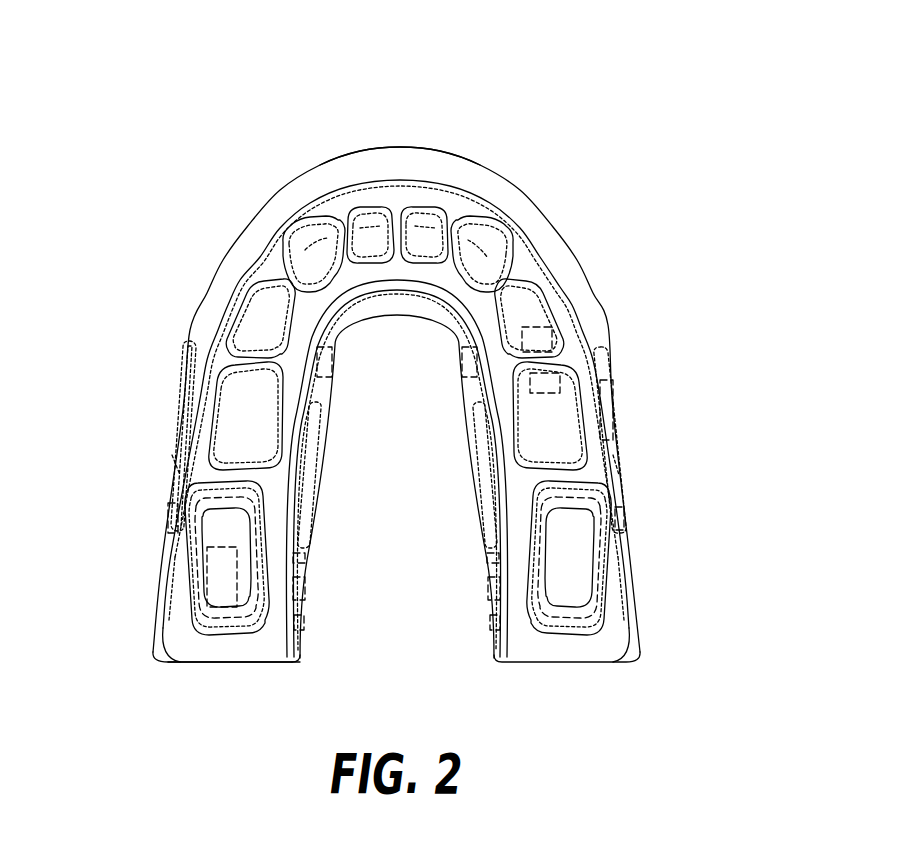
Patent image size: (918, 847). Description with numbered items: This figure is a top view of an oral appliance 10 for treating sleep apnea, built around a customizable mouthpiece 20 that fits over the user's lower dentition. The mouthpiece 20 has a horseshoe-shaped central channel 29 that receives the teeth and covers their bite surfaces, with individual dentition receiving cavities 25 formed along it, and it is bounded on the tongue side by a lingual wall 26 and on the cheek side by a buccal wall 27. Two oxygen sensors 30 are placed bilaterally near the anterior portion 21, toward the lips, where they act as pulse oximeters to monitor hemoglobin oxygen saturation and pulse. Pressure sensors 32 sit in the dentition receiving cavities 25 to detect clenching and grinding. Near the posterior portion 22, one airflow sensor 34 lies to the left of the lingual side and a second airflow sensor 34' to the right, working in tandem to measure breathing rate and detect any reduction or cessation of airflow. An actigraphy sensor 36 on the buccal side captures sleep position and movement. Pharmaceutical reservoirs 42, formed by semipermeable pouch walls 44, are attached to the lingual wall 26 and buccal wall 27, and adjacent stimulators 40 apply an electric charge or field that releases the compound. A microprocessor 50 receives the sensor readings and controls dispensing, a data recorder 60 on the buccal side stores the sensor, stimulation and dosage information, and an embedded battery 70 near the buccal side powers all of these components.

The oral appliance 10 is at (511, 82).
The mouthpiece 20 is at (615, 312).
The anterior portion 21 is at (326, 141).
The posterior portion 22 is at (377, 675).
The dentition receiving cavities 25 is at (483, 245).
The lingual wall 26 is at (460, 495).
The buccal wall 27 is at (156, 476).
The central channel 29 is at (241, 664).
The oxygen sensor 30 is at (462, 360).
The pressure sensor 32 is at (553, 340).
The airflow sensor 34 is at (329, 643).
The airflow sensor 34' is at (454, 636).
The actigraphy sensor 36 is at (610, 410).
The stimulator 40 is at (305, 567).
The pharmaceutical reservoir 42 is at (396, 497).
The pouch walls 44 is at (178, 452).
The microprocessor 50 is at (169, 550).
The data recorder 60 is at (622, 532).
The battery 70 is at (180, 408).